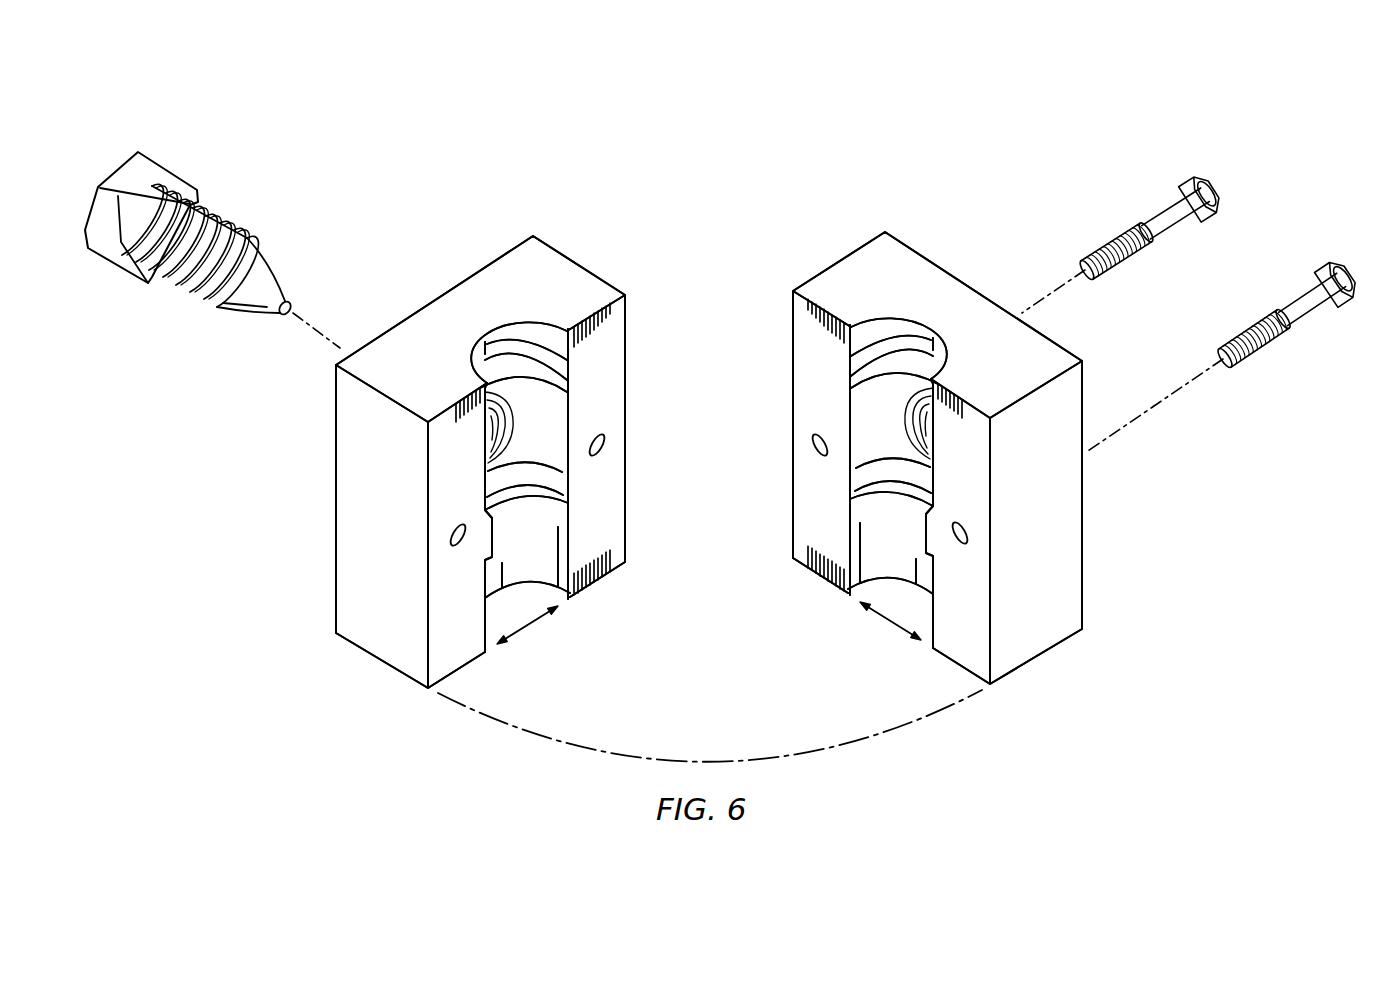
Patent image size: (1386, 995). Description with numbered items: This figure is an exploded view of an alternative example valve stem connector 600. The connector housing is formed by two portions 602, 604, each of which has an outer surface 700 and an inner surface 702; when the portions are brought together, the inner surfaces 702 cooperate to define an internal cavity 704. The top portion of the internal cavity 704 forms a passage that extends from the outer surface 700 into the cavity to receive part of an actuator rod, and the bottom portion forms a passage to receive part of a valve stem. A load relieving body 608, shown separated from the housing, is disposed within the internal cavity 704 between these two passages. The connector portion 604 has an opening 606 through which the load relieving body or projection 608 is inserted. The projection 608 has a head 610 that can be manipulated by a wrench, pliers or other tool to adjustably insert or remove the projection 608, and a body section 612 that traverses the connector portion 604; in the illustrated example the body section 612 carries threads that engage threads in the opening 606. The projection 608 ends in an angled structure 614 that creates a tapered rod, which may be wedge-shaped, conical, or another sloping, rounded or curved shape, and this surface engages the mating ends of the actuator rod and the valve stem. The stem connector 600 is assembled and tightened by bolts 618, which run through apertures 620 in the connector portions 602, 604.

The valve stem connector 600 is at (946, 179).
The connector portion 602 is at (835, 262).
The connector portion 604 is at (487, 266).
The opening 606 is at (513, 422).
The load relieving body 608 is at (226, 152).
The head 610 is at (118, 168).
The body section 612 is at (181, 297).
The angled structure 614 is at (273, 271).
The bolts 618 is at (1173, 200).
The apertures 620 is at (606, 449).
The outer surface 700 is at (379, 664).
The inner surface 702 is at (474, 664).
The internal cavity 704 is at (530, 628).